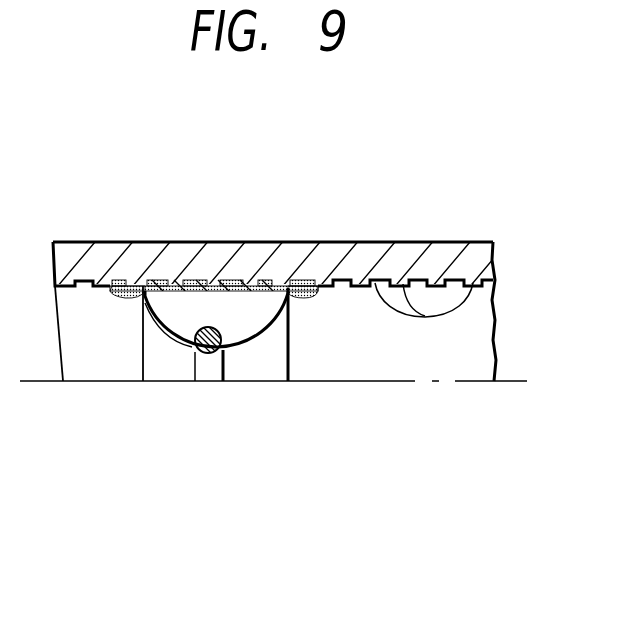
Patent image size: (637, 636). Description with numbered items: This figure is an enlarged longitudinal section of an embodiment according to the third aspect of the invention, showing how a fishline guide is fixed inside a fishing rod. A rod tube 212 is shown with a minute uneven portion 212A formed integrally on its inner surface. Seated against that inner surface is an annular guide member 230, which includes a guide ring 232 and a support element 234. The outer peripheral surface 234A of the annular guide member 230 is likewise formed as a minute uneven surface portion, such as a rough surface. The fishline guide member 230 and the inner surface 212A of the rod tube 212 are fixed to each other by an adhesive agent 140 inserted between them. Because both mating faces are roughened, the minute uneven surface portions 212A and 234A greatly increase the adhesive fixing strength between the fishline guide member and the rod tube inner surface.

The adhesive agent 140 is at (297, 288).
The rod tube 212 is at (393, 258).
The minute uneven portion 212A is at (488, 242).
The annular guide member 230 is at (247, 405).
The guide ring 232 is at (205, 404).
The support element 234 is at (254, 321).
The outer peripheral surface 234A is at (200, 282).